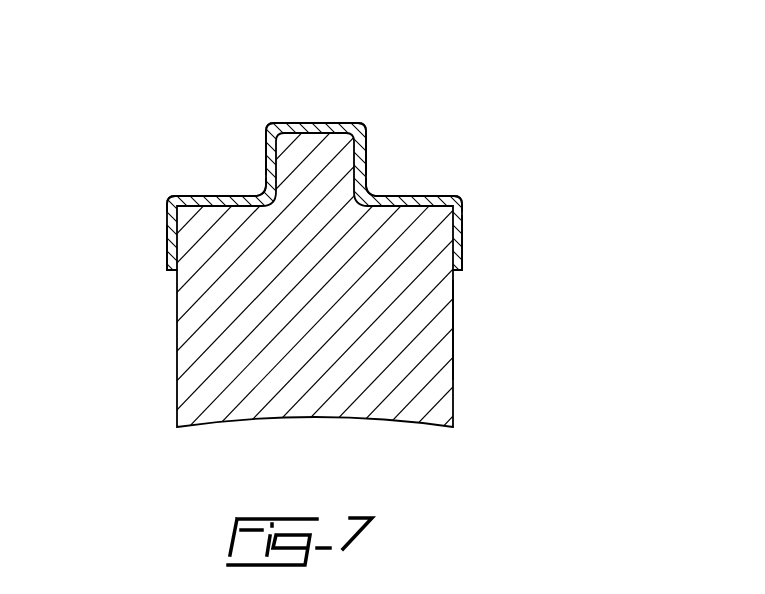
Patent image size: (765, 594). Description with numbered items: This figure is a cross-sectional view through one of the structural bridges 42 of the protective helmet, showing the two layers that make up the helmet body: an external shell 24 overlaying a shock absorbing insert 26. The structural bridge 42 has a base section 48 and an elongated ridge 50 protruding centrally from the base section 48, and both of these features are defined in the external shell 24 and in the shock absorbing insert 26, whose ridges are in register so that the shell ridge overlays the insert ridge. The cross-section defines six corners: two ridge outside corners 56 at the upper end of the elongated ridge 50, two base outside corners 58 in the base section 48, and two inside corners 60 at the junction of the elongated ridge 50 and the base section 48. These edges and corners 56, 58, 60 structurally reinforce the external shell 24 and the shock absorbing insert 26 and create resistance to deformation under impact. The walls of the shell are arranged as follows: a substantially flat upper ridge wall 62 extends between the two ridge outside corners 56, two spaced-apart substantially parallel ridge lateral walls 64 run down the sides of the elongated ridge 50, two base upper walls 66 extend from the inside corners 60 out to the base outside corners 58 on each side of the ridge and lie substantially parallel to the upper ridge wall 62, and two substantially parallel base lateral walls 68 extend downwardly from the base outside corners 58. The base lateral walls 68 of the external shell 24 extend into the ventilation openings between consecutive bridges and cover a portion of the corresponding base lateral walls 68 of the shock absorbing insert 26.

The external shell 24 is at (322, 122).
The shock absorbing insert 26 is at (432, 387).
The structural bridge 42 is at (480, 123).
The base section 48 is at (462, 235).
The elongated ridge 50 is at (367, 160).
The ridge outside corner 56 is at (268, 127).
The base outside corner 58 is at (166, 203).
The inside corner 60 is at (263, 185).
The upper ridge wall 62 is at (292, 122).
The ridge lateral wall 64 is at (263, 163).
The base upper wall 66 is at (217, 197).
The base lateral wall 68 is at (164, 233).